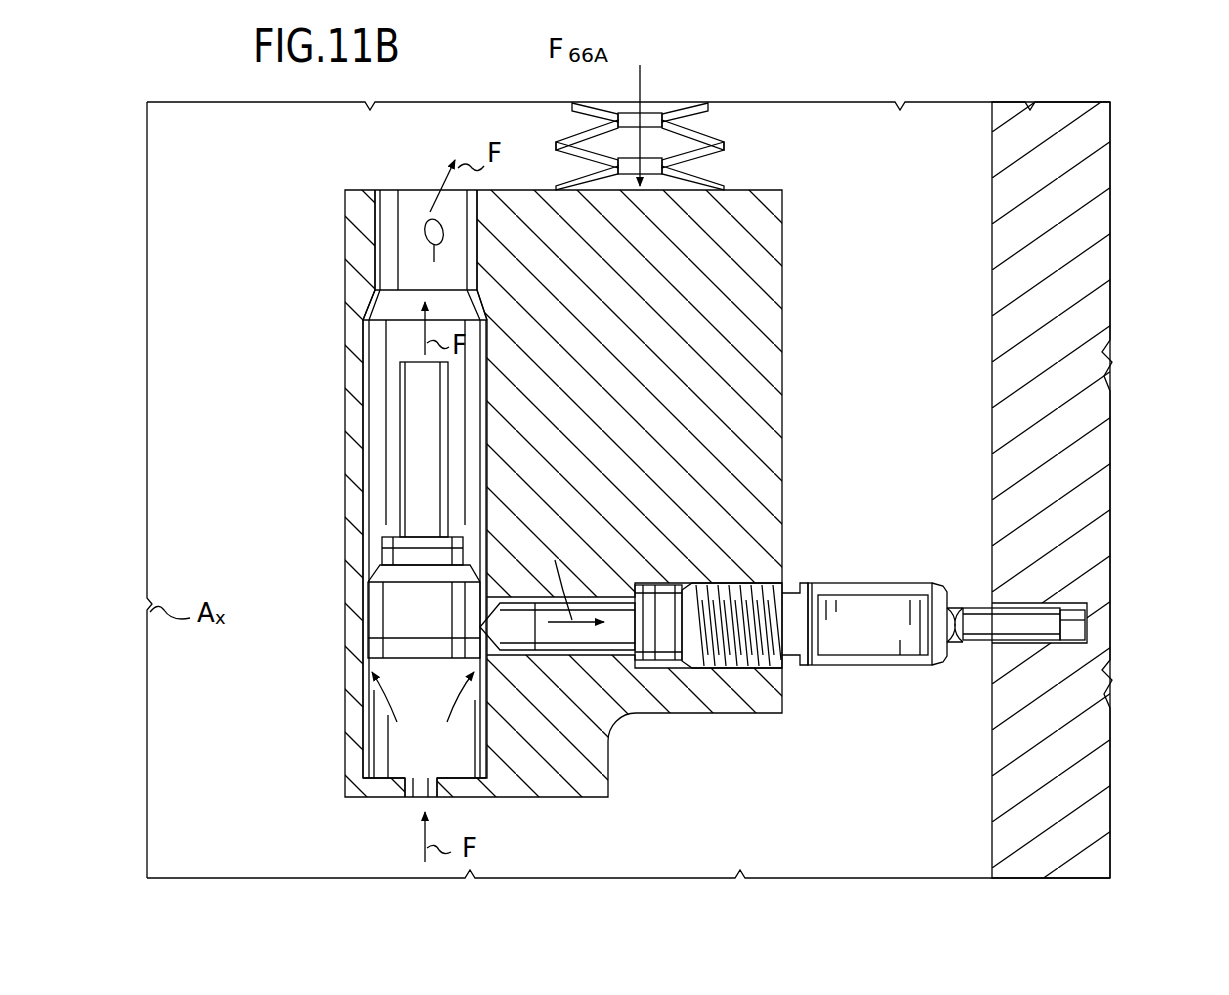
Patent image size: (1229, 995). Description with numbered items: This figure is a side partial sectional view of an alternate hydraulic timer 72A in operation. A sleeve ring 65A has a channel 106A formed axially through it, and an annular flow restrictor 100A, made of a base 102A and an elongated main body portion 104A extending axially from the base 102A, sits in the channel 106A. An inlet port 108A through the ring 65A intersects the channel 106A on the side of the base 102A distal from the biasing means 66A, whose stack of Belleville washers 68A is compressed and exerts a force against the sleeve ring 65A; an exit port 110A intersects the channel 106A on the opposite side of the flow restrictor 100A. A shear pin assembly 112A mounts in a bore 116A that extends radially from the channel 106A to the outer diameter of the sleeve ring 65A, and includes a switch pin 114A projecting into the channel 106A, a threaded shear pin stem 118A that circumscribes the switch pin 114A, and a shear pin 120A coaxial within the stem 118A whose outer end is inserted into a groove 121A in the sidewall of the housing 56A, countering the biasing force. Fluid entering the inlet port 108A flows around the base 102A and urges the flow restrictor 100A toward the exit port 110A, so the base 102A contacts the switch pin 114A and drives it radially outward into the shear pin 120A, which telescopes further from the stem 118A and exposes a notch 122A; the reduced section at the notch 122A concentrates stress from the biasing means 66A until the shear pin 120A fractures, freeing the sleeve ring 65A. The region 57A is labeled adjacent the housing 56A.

The housing 56A is at (1036, 118).
The chamber 57A is at (265, 788).
The sleeve ring 65A is at (770, 190).
The biasing means 66A is at (625, 114).
The Belleville washers 68A is at (570, 128).
The hydraulic timer 72A is at (332, 283).
The flow restrictor 100A is at (388, 408).
The base 102A is at (375, 614).
The main body portion 104A is at (410, 462).
The channel 106A is at (374, 357).
The inlet port 108A is at (408, 793).
The exit port 110A is at (426, 222).
The shear pin assembly 112A is at (657, 578).
The switch pin 114A is at (565, 644).
The bore 116A is at (735, 580).
The shear pin stem 118A is at (876, 608).
The shear pin 120A is at (1045, 622).
The groove 121A is at (1086, 612).
The notch 122A is at (957, 646).